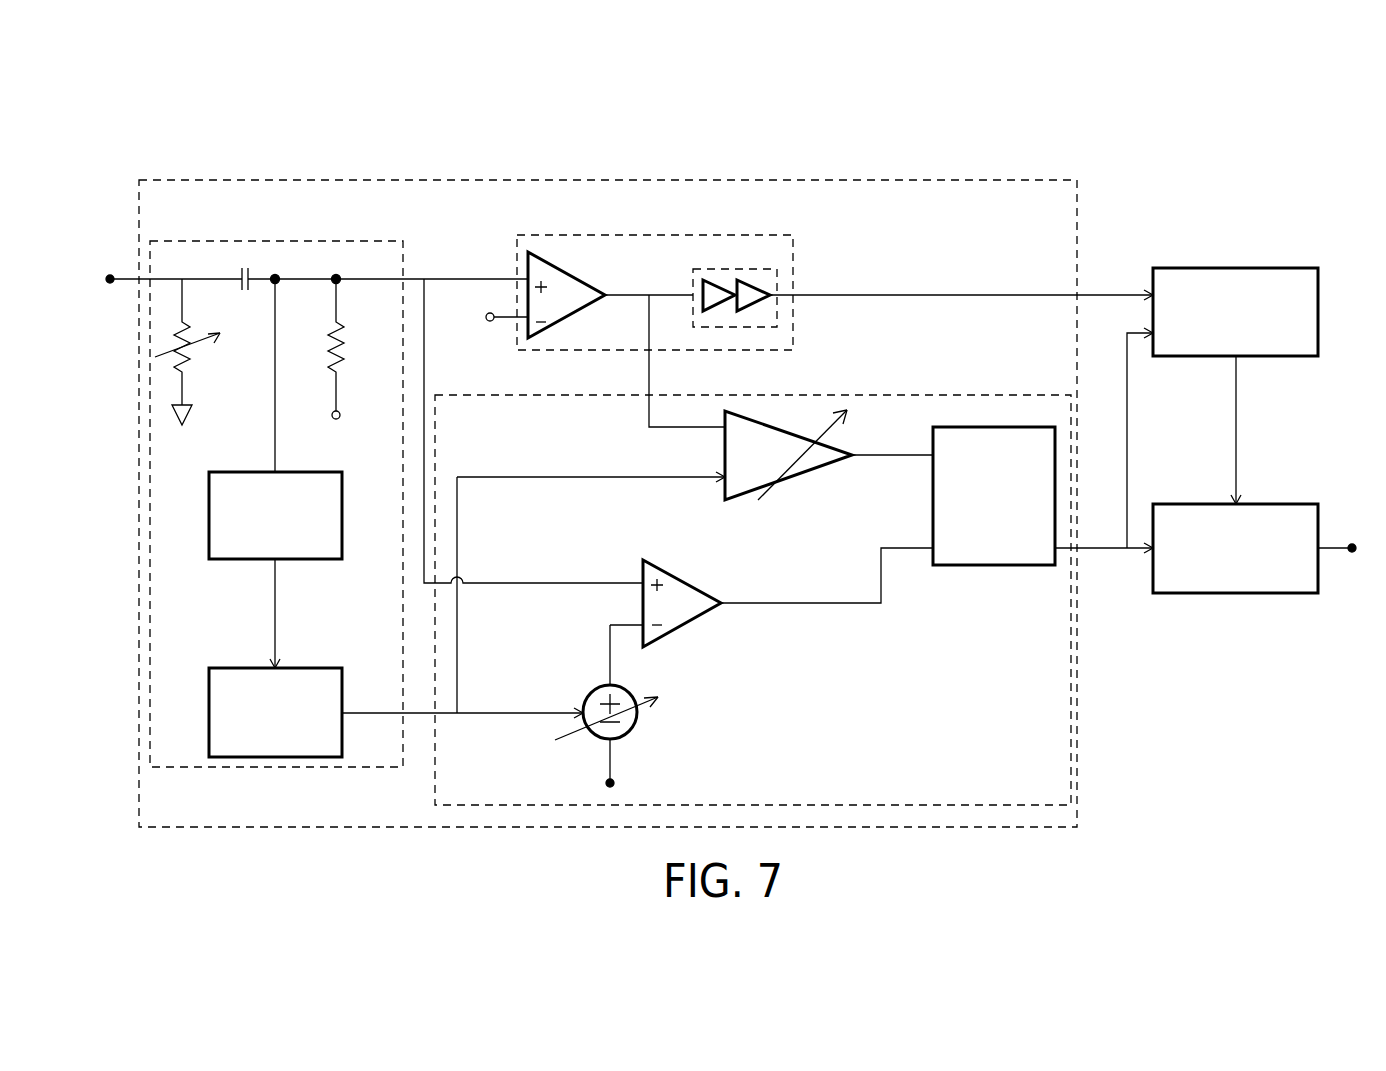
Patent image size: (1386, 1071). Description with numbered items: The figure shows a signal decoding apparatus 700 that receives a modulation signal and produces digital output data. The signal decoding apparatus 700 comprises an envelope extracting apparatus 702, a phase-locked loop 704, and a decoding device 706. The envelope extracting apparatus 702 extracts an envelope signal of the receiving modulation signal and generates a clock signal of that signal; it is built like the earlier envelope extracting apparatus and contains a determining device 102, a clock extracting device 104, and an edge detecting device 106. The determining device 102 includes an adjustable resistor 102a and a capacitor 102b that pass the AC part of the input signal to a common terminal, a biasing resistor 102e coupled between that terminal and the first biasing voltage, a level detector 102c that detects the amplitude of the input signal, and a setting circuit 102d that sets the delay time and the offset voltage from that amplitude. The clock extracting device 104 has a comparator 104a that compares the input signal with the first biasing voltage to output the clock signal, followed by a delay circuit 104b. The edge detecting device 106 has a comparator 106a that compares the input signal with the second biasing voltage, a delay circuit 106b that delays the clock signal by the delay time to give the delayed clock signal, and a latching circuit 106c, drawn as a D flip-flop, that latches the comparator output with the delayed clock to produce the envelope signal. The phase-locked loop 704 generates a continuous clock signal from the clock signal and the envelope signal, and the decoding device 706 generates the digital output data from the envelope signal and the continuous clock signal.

The signal decoding apparatus 700 is at (1292, 138).
The envelope extracting apparatus 702 is at (945, 180).
The determining device 102 is at (365, 241).
The adjustable resistor 102a is at (188, 348).
The capacitor 102b is at (245, 265).
The level detector 102c is at (370, 505).
The setting circuit 102d is at (370, 670).
The biasing resistor 102e is at (343, 350).
The clock extracting device 104 is at (620, 235).
The comparator 104a is at (552, 252).
The delay circuit 104b is at (745, 268).
The edge detecting device 106 is at (1000, 395).
The comparator 106a is at (718, 562).
The delay circuit 106b is at (808, 478).
The latching circuit 106c is at (1000, 565).
The phase-locked loop 704 is at (1243, 268).
The decoding device 706 is at (1275, 504).